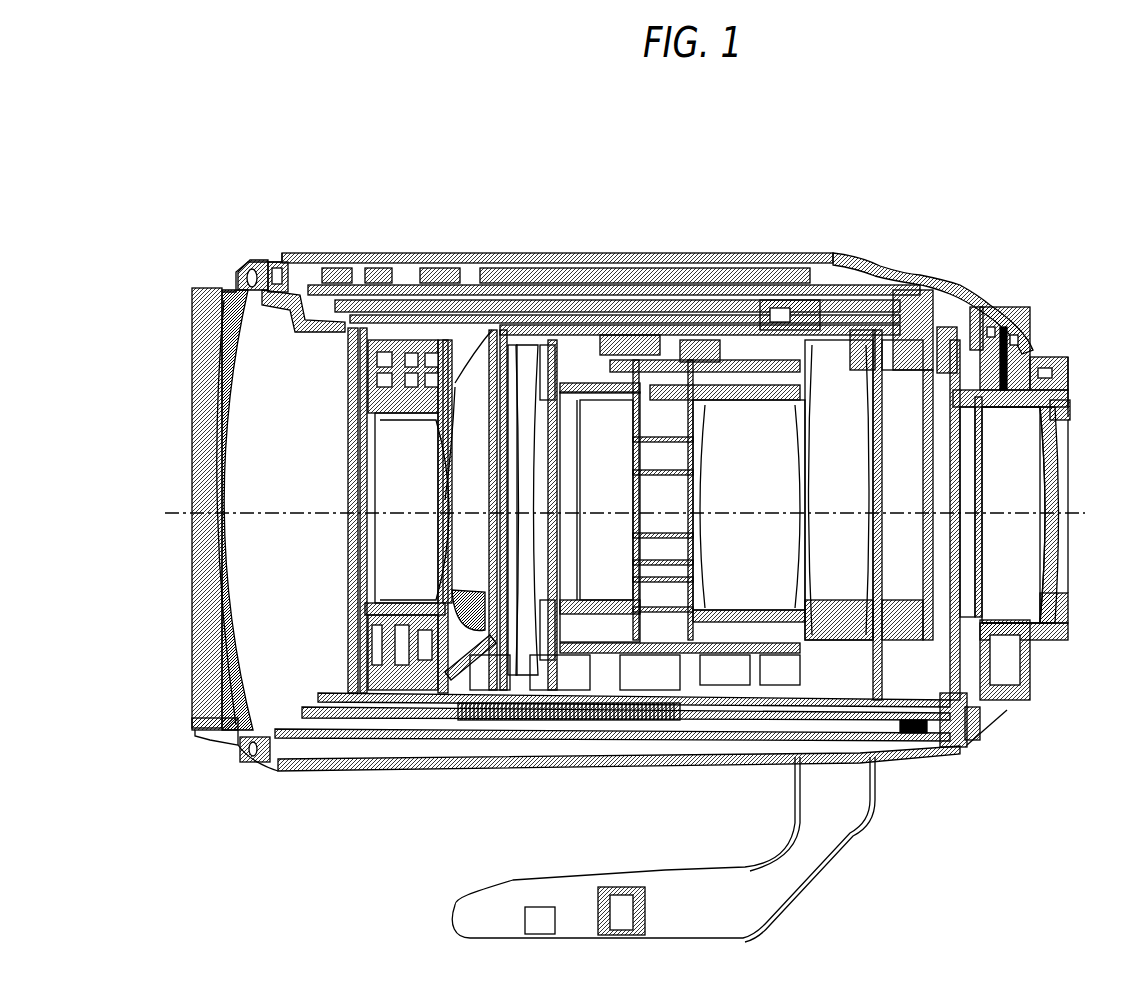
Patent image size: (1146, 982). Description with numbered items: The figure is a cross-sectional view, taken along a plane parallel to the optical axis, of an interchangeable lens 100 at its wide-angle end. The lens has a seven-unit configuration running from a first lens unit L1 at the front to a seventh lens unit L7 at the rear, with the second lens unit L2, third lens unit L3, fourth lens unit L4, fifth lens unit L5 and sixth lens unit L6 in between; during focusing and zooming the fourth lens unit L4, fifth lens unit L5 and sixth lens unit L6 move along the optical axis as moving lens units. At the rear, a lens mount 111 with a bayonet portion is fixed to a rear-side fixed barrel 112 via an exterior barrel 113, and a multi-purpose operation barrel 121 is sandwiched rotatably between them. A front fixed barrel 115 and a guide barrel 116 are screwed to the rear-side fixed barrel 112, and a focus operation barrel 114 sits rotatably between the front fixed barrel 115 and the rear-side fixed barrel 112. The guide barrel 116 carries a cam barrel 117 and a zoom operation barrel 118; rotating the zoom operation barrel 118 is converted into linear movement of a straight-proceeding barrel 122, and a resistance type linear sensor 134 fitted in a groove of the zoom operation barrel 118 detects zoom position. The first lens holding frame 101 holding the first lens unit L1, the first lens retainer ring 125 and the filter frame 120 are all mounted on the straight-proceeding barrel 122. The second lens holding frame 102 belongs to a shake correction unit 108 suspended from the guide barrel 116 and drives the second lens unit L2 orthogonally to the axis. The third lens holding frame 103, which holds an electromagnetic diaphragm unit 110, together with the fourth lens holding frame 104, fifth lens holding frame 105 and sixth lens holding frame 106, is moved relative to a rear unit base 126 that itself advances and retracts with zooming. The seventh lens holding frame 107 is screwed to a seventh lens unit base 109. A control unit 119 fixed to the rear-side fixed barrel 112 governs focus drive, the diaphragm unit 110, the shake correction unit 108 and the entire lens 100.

The interchangeable lens 100 is at (77, 142).
The first lens holding frame 101 is at (268, 353).
The second lens holding frame 102 is at (398, 450).
The third lens holding frame 103 is at (530, 440).
The fourth lens holding frame 104 is at (598, 437).
The fifth lens holding frame 105 is at (700, 400).
The sixth lens holding frame 106 is at (892, 457).
The seventh lens holding frame 107 is at (1042, 355).
The shake correction unit 108 is at (365, 345).
The seventh lens unit base 109 is at (993, 450).
The electromagnetic diaphragm unit 110 is at (492, 420).
The lens mount 111 is at (1060, 352).
The rear-side fixed barrel 112 is at (868, 345).
The exterior barrel 113 is at (963, 380).
The focus operation barrel 114 is at (703, 752).
The front fixed barrel 115 is at (640, 748).
The guide barrel 116 is at (447, 710).
The cam barrel 117 is at (380, 697).
The zoom operation barrel 118 is at (336, 750).
The control unit 119 is at (982, 718).
The filter frame 120 is at (212, 737).
The multi-purpose operation barrel 121 is at (915, 310).
The straight-proceeding barrel 122 is at (240, 285).
The first lens retainer ring 125 is at (276, 285).
The rear unit base 126 is at (718, 678).
The resistance type linear sensor 134 is at (790, 310).
The first lens unit L1 is at (228, 300).
The second lens unit L2 is at (408, 330).
The third lens unit L3 is at (530, 345).
The fourth lens unit L4 is at (613, 447).
The fifth lens unit L5 is at (758, 448).
The sixth lens unit L6 is at (840, 400).
The seventh lens unit L7 is at (1020, 397).